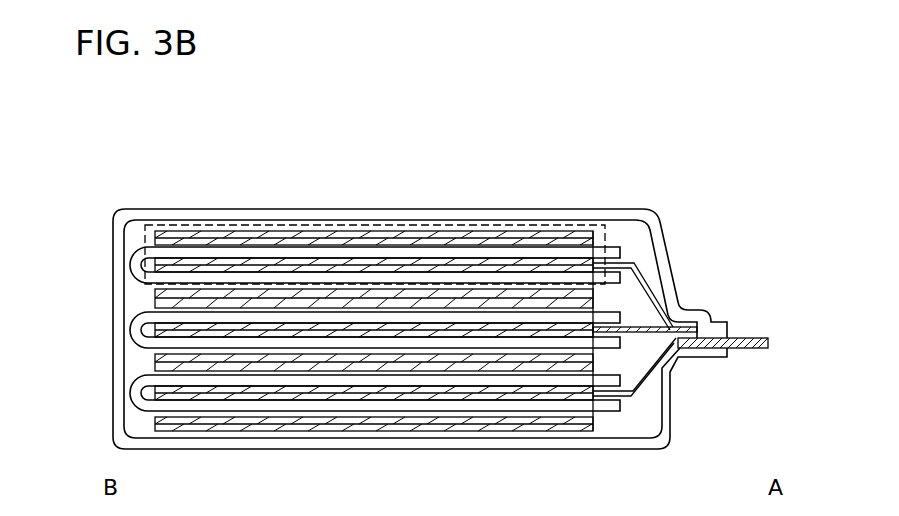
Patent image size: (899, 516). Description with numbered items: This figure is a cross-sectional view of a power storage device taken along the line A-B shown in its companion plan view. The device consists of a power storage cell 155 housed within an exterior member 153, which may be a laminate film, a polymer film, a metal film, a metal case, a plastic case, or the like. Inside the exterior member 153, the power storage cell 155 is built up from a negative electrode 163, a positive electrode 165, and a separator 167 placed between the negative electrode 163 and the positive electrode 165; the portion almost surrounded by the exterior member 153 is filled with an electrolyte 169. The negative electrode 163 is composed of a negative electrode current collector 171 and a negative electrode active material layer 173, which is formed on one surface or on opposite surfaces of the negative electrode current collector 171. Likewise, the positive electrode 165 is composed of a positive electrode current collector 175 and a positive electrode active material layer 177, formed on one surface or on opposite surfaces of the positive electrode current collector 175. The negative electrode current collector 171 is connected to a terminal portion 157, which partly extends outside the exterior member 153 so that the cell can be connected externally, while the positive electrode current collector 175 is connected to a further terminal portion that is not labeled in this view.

The exterior member 153 is at (662, 268).
The power storage cell 155 is at (165, 255).
The terminal portion 157 is at (770, 343).
The negative electrode 163 is at (312, 148).
The positive electrode 165 is at (567, 148).
The separator 167 is at (358, 251).
The electrolyte 169 is at (635, 245).
The negative electrode current collector 171 is at (253, 238).
The negative electrode active material layer 173 is at (307, 250).
The positive electrode current collector 175 is at (500, 268).
The positive electrode active material layer 177 is at (445, 260).